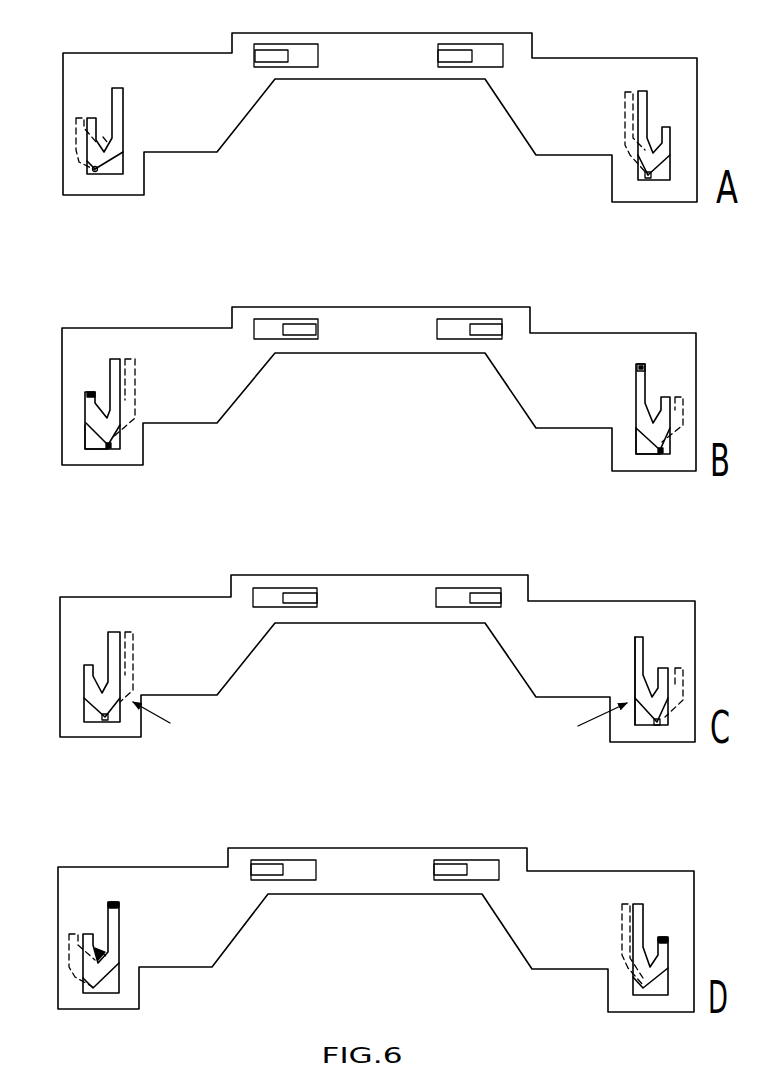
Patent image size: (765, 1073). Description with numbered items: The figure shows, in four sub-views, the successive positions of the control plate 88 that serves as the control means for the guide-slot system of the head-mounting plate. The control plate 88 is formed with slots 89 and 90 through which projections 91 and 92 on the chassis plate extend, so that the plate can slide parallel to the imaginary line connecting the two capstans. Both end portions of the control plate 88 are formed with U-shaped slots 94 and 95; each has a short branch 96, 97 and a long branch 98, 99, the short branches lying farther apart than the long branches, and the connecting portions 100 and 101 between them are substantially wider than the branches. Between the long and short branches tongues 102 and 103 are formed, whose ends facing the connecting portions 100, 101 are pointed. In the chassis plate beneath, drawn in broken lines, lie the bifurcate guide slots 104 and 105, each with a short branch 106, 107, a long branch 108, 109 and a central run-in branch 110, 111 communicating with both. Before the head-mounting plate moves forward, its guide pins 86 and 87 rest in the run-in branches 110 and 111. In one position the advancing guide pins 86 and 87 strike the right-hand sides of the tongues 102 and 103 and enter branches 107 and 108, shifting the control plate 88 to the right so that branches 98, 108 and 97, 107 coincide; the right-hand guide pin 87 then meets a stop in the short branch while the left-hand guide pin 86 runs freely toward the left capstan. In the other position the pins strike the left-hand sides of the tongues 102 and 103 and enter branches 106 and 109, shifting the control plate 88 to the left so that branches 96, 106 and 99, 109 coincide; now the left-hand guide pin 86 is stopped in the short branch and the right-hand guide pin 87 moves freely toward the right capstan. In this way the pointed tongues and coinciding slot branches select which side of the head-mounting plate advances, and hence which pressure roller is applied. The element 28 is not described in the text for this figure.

The contact arm 28 is at (113, 640).
The guide pin 86 is at (95, 172).
The guide pin 87 is at (648, 178).
The control plate 88 is at (561, 72).
The slot 89 is at (310, 52).
The slot 90 is at (490, 52).
The projection 91 is at (270, 52).
The projection 92 is at (455, 52).
The U-shaped slot 94 is at (163, 721).
The U-shaped slot 95 is at (590, 723).
The short branch 96 is at (88, 670).
The short branch 97 is at (665, 397).
The long branch 98 is at (115, 388).
The long branch 99 is at (638, 637).
The connecting portion 100 is at (93, 442).
The connecting portion 101 is at (645, 447).
The tongue 102 is at (103, 140).
The tongue 103 is at (656, 143).
The bifurcate guide slot 104 is at (73, 973).
The bifurcate guide slot 105 is at (623, 973).
The short branch 106 is at (76, 118).
The short branch 107 is at (688, 404).
The long branch 108 is at (130, 356).
The long branch 109 is at (628, 92).
The central run-in branch 110 is at (109, 448).
The central run-in branch 111 is at (660, 452).